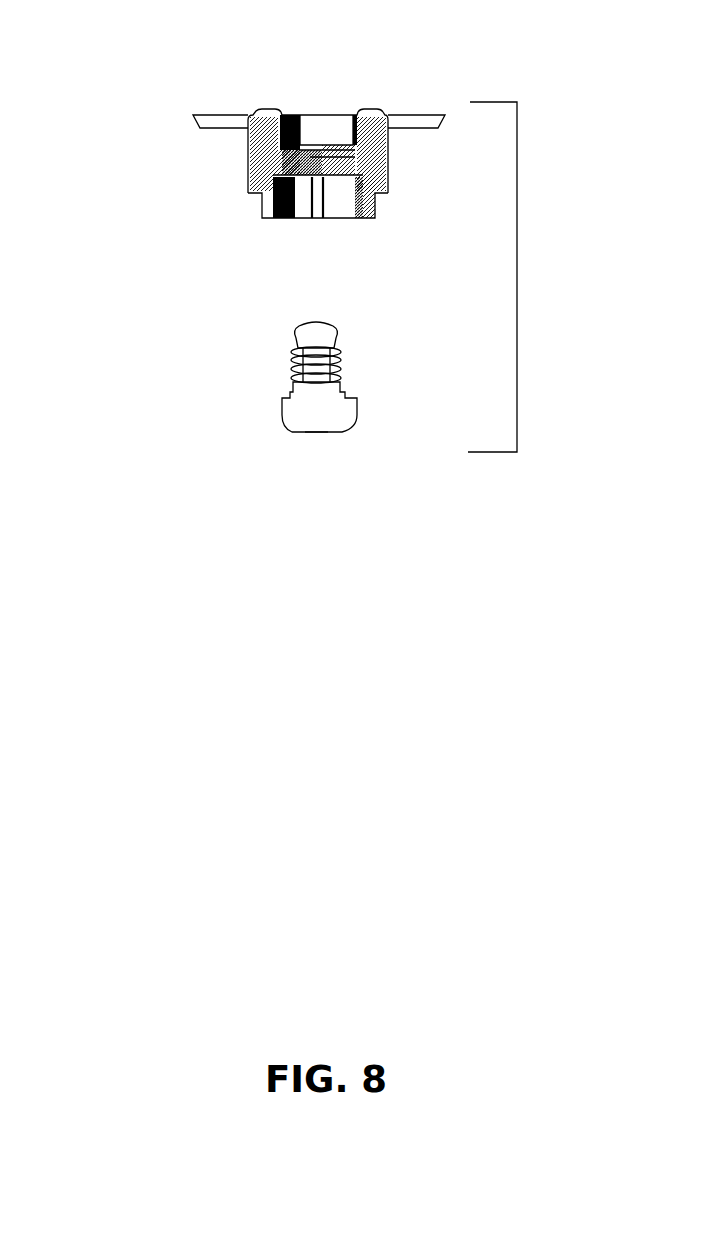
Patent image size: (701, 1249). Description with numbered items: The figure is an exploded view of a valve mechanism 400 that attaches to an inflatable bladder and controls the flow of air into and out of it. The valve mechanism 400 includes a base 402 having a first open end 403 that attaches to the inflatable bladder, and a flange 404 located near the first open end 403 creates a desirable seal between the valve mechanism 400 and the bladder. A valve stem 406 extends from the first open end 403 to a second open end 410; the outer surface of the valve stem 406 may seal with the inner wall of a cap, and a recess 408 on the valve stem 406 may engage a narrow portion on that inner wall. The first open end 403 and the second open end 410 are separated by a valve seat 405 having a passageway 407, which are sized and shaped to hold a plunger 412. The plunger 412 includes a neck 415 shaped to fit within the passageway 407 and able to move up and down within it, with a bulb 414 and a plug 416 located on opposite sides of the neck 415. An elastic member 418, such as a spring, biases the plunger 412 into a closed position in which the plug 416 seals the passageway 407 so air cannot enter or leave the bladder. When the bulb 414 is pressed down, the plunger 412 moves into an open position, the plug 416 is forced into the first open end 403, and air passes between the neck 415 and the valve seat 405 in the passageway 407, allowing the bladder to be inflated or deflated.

The valve mechanism 400 is at (517, 275).
The base 402 is at (372, 112).
The first open end 403 is at (315, 118).
The flange 404 is at (192, 125).
The valve seat 405 is at (288, 162).
The valve stem 406 is at (245, 185).
The passageway 407 is at (323, 162).
The recess 408 is at (376, 210).
The second open end 410 is at (310, 200).
The plunger 412 is at (282, 402).
The bulb 414 is at (316, 434).
The neck 415 is at (333, 377).
The plug 416 is at (317, 325).
The elastic member 418 is at (290, 367).